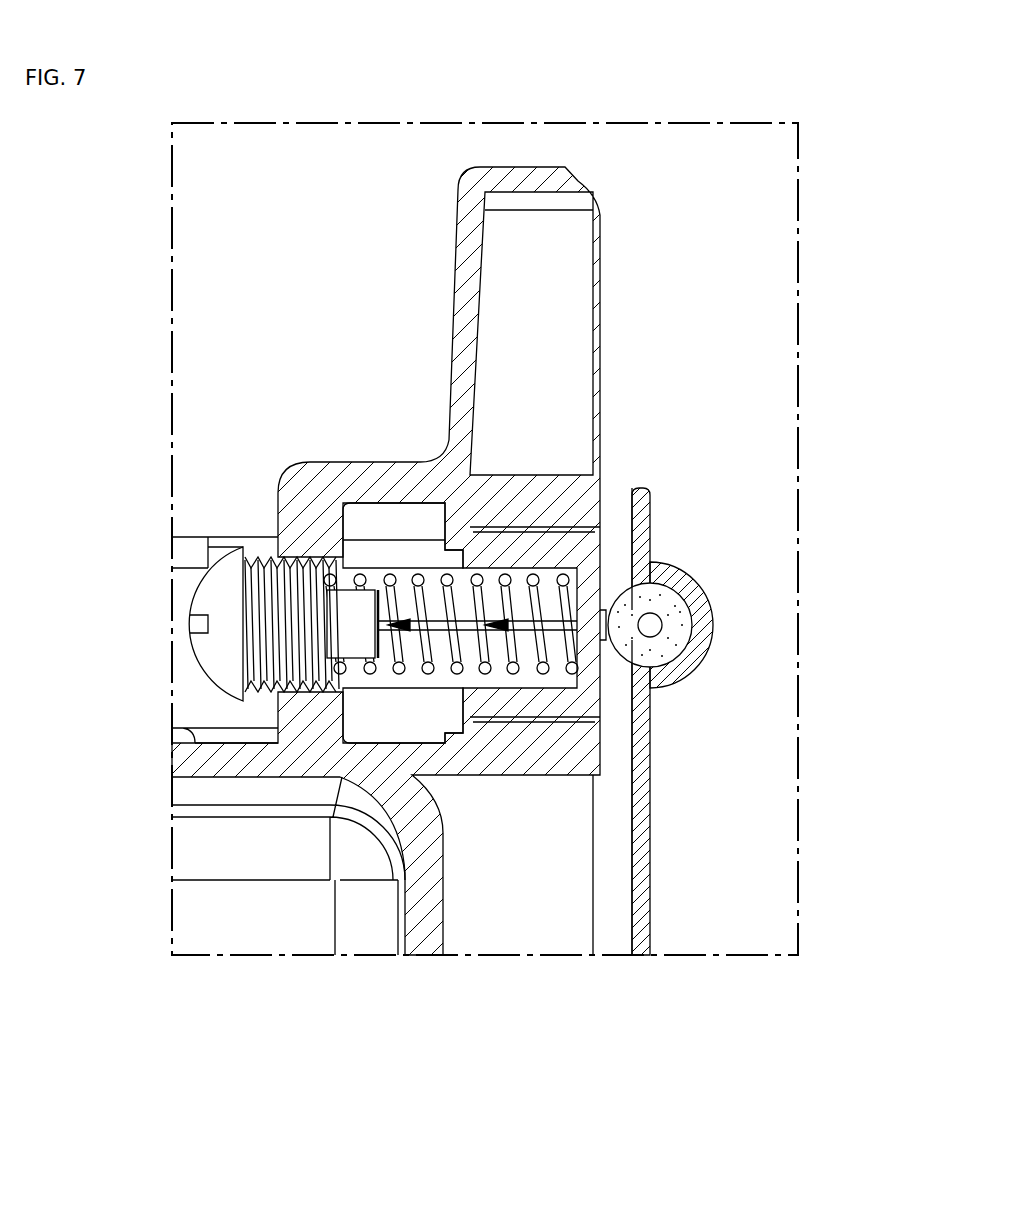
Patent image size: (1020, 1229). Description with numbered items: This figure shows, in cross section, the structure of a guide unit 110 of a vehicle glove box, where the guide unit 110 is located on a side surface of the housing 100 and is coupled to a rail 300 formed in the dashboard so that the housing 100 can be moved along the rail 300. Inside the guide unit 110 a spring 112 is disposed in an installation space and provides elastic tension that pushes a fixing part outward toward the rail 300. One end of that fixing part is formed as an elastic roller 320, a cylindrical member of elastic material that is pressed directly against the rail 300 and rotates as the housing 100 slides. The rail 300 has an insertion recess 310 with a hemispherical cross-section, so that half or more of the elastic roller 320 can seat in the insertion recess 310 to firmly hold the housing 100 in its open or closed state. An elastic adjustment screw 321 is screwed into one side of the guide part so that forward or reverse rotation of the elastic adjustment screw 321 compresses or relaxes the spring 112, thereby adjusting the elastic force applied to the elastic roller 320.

The housing 100 is at (243, 819).
The guide unit 110 is at (603, 489).
The spring 112 is at (543, 670).
The rail 300 is at (648, 505).
The insertion recess 310 is at (695, 588).
The elastic roller 320 is at (675, 633).
The elastic adjustment screw 321 is at (217, 598).